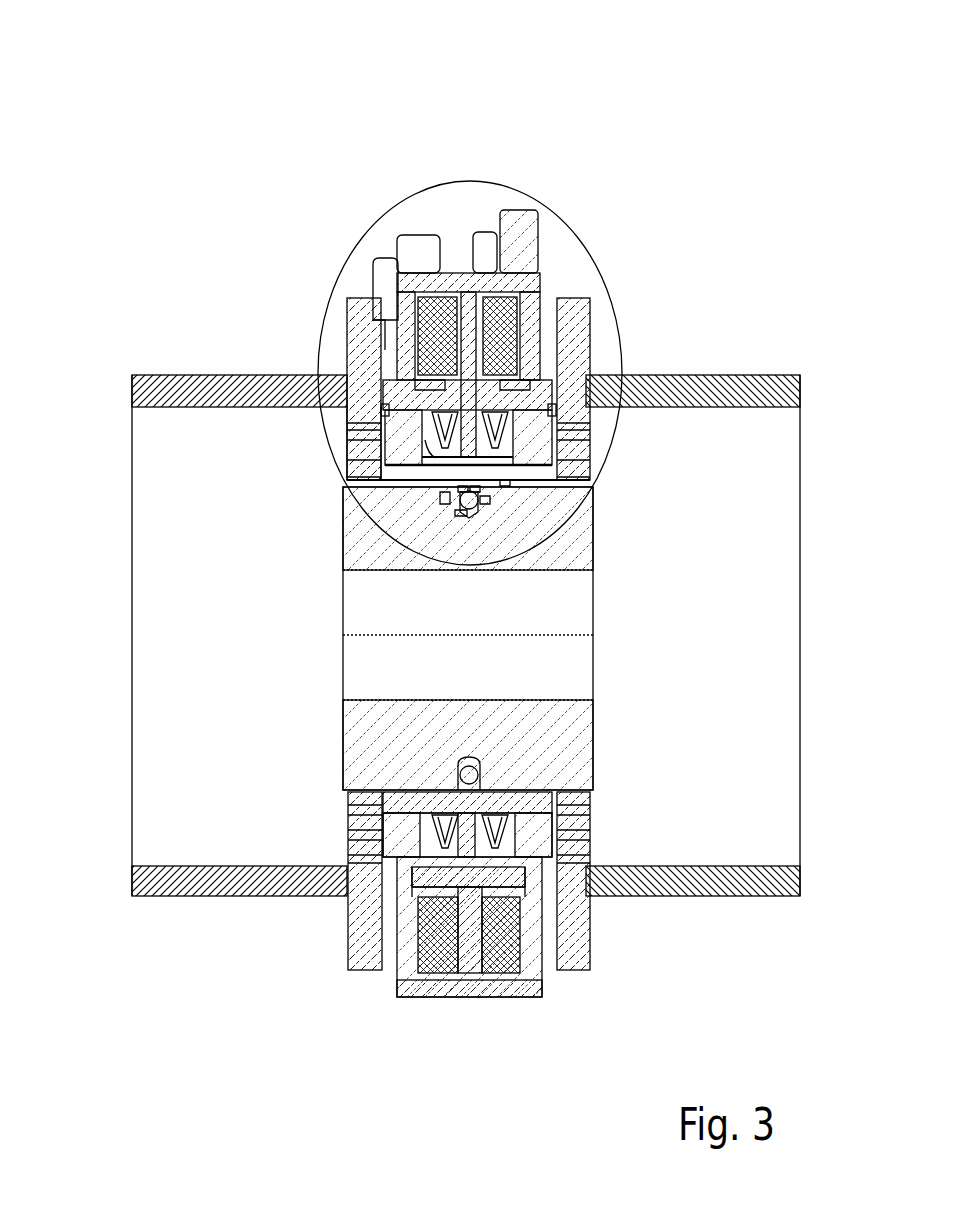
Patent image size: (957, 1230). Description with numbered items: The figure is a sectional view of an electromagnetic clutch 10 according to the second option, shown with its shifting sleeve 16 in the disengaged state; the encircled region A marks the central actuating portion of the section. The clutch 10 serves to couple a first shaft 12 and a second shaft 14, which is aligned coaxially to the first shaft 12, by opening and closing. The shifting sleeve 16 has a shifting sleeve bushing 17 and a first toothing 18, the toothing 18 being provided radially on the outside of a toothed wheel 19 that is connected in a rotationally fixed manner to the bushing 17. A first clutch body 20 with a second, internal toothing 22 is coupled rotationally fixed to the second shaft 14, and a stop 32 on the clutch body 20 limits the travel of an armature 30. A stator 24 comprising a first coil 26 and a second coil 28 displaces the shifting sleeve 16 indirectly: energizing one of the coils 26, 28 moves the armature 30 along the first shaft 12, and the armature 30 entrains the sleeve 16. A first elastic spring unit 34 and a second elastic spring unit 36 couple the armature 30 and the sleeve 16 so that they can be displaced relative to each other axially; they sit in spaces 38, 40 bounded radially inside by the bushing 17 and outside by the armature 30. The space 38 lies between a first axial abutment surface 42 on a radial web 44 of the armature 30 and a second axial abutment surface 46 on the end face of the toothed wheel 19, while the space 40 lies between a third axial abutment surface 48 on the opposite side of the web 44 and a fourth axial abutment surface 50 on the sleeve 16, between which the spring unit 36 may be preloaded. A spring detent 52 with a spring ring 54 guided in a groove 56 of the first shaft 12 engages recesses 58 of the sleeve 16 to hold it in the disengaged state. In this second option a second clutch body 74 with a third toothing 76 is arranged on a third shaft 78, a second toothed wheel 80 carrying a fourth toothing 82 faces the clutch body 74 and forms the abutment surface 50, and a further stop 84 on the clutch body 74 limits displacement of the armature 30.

The electromagnetic clutch 10 is at (178, 130).
The first shaft 12 is at (373, 560).
The second shaft 14 is at (167, 392).
The shifting sleeve 16 is at (410, 522).
The shifting sleeve bushing 17 is at (397, 478).
The first toothing 18 is at (373, 413).
The toothed wheel 19 is at (382, 395).
The first clutch body 20 is at (402, 437).
The second toothing 22 is at (363, 458).
The stator 24 is at (470, 390).
The first coil 26 is at (442, 308).
The second coil 28 is at (512, 308).
The armature 30 is at (367, 325).
The stop 32 is at (422, 380).
The first elastic spring unit 34 is at (400, 488).
The second elastic spring unit 36 is at (548, 480).
The space 38 is at (450, 418).
The space 40 is at (495, 417).
The first axial abutment surface 42 is at (465, 492).
The radial web 44 is at (471, 207).
The second axial abutment surface 46 is at (445, 497).
The third axial abutment surface 48 is at (461, 515).
The fourth axial abutment surface 50 is at (474, 492).
The spring detent 52 is at (430, 455).
The spring ring 54 is at (487, 500).
The groove 56 is at (478, 508).
The recesses 58 is at (507, 485).
The second clutch body 74 is at (570, 327).
The third toothing 76 is at (575, 455).
The third shaft 78 is at (738, 388).
The second toothed wheel 80 is at (535, 437).
The fourth toothing 82 is at (548, 440).
The stop 84 is at (563, 413).
The detail region A is at (537, 250).